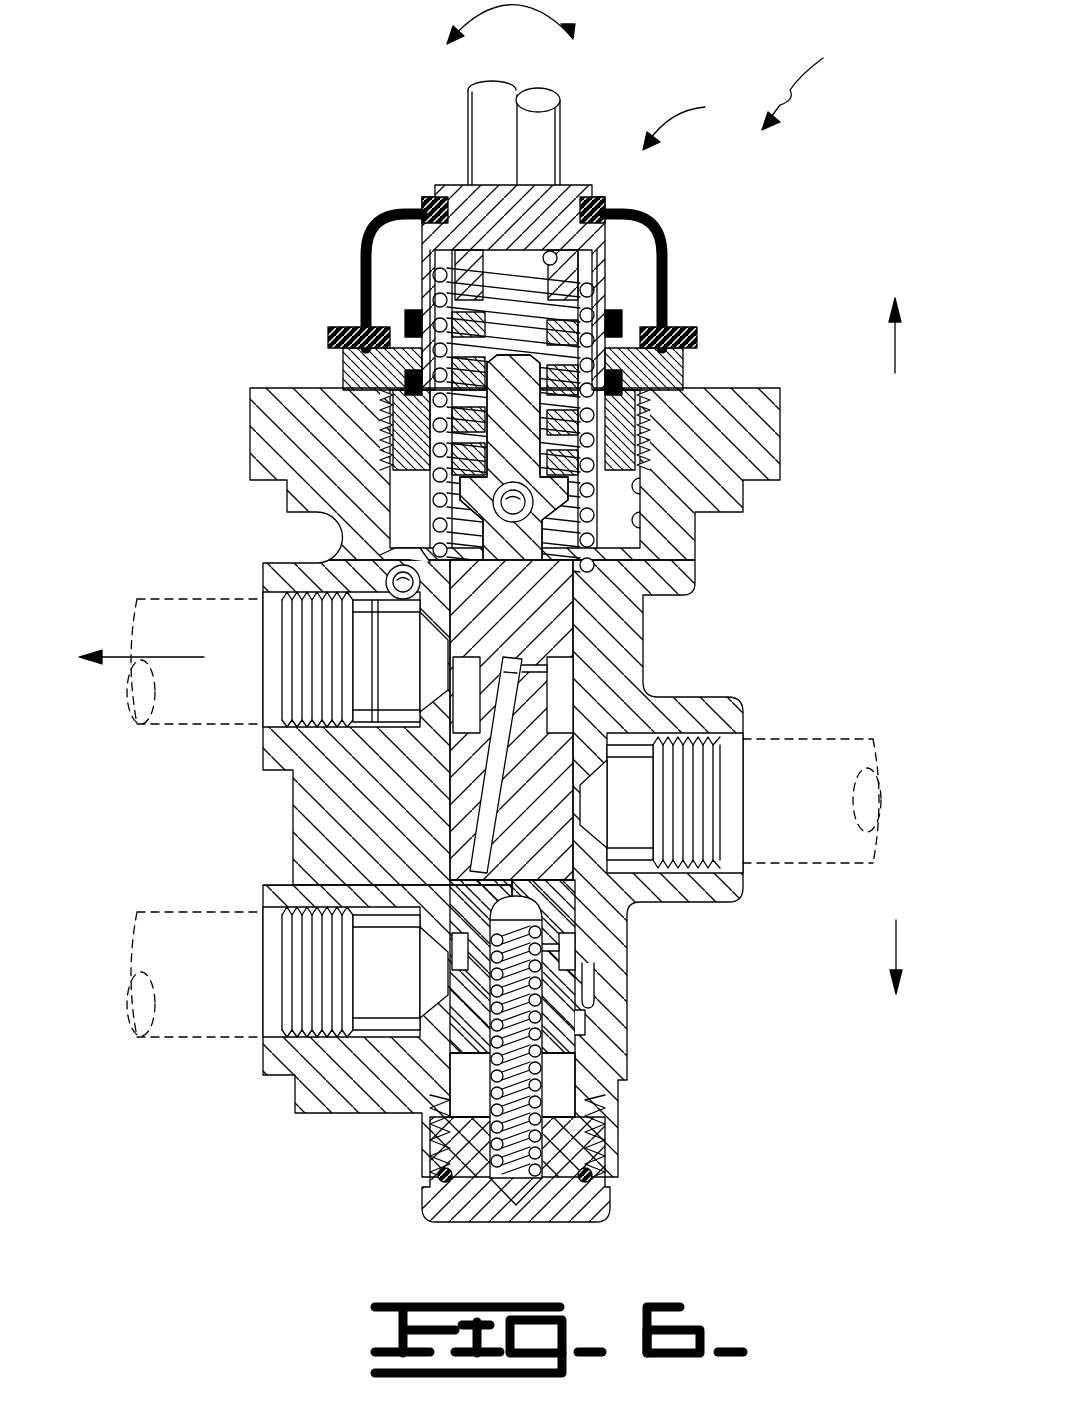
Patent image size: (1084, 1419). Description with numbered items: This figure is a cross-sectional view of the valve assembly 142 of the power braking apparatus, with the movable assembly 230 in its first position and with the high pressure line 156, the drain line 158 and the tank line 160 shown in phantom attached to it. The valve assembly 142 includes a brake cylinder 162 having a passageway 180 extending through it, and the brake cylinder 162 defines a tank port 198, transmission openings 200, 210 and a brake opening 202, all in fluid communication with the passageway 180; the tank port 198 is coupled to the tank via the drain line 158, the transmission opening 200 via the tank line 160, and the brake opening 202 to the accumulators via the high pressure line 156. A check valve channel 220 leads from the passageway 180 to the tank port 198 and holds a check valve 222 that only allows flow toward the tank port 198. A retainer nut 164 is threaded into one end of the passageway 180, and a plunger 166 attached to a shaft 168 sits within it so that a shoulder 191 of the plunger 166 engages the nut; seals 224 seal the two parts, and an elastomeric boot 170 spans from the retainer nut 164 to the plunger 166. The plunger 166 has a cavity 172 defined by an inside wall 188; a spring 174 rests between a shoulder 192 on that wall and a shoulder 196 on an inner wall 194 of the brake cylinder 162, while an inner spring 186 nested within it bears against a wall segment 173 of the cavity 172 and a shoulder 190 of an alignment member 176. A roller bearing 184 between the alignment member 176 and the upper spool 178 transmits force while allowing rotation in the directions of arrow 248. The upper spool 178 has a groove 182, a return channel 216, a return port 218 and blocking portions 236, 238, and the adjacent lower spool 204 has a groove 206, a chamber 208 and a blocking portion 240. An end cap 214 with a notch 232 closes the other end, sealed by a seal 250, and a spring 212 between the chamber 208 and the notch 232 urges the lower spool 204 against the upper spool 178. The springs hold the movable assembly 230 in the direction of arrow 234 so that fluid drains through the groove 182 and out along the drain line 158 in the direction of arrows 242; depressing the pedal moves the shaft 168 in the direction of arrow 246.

The valve assembly 142 is at (816, 84).
The high pressure line 156 is at (875, 745).
The drain line 158 is at (140, 598).
The tank line 160 is at (140, 911).
The brake cylinder 162 is at (768, 440).
The retainer nut 164 is at (672, 367).
The plunger 166 is at (468, 196).
The shaft 168 is at (540, 95).
The boot 170 is at (652, 225).
The cavity 172 is at (418, 212).
The wall segment 173 is at (552, 255).
The spring 174 is at (352, 362).
The alignment member 176 is at (333, 382).
The upper spool 178 is at (545, 617).
The passageway 180 is at (700, 527).
The groove 182 is at (470, 760).
The roller bearing 184 is at (493, 497).
The inner spring 186 is at (468, 400).
The inside wall 188 is at (580, 272).
The shoulder 190 is at (440, 452).
The shoulder 191 is at (430, 472).
The shoulder 192 is at (432, 282).
The inner wall 194 is at (712, 492).
The shoulder 196 is at (683, 556).
The tank port 198 is at (300, 722).
The transmission opening 200 is at (300, 1012).
The brake opening 202 is at (740, 832).
The lower spool 204 is at (598, 985).
The groove 206 is at (600, 950).
The chamber 208 is at (465, 862).
The transmission opening 210 is at (598, 1027).
The spring 212 is at (490, 1075).
The end cap 214 is at (600, 1212).
The return channel 216 is at (455, 805).
The return port 218 is at (560, 665).
The check valve channel 220 is at (388, 582).
The check valve 222 is at (455, 537).
The seals 224 is at (398, 305).
The movable assembly 230 is at (698, 121).
The notch 232 is at (508, 1200).
The arrow 234 is at (897, 340).
The blocking portion 236 is at (680, 735).
The blocking portion 238 is at (365, 645).
The blocking portion 240 is at (620, 1048).
The arrows 242 is at (140, 657).
The arrow 246 is at (898, 940).
The arrow 248 is at (515, 12).
The seal 250 is at (438, 1175).